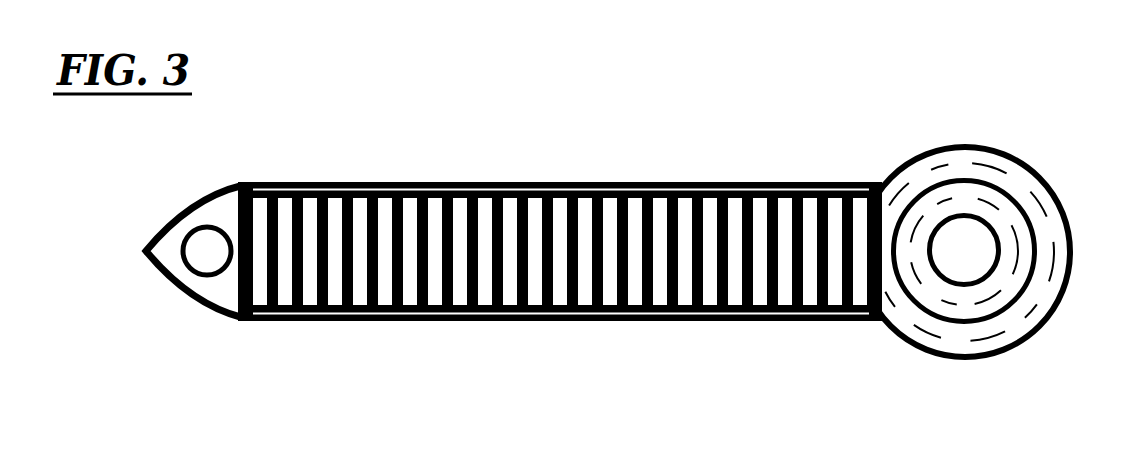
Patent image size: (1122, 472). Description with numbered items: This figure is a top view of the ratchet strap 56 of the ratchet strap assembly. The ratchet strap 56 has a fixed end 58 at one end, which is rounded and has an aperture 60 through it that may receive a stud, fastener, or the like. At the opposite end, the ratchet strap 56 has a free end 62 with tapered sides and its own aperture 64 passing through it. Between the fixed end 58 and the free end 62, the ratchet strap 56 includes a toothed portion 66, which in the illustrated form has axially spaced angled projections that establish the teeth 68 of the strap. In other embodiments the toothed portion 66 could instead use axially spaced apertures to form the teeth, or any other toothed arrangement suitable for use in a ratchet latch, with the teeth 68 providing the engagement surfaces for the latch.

The ratchet strap 56 is at (791, 120).
The fixed end 58 is at (1067, 213).
The aperture 60 is at (973, 240).
The free end 62 is at (168, 284).
The aperture 64 is at (207, 251).
The toothed portion 66 is at (534, 196).
The teeth 68 is at (285, 212).